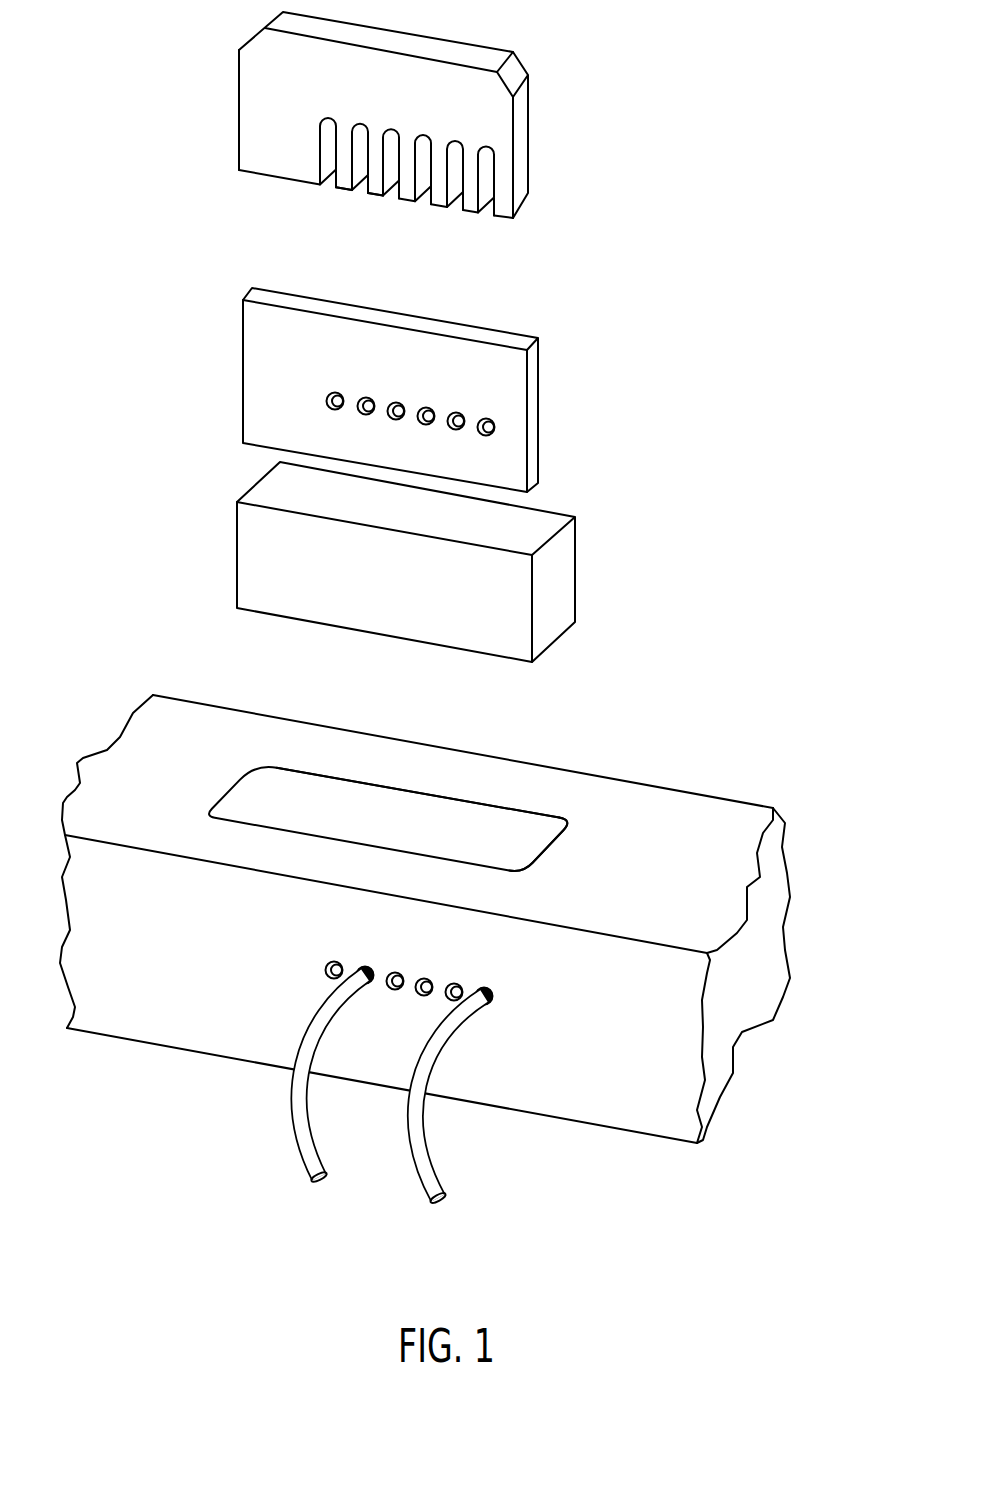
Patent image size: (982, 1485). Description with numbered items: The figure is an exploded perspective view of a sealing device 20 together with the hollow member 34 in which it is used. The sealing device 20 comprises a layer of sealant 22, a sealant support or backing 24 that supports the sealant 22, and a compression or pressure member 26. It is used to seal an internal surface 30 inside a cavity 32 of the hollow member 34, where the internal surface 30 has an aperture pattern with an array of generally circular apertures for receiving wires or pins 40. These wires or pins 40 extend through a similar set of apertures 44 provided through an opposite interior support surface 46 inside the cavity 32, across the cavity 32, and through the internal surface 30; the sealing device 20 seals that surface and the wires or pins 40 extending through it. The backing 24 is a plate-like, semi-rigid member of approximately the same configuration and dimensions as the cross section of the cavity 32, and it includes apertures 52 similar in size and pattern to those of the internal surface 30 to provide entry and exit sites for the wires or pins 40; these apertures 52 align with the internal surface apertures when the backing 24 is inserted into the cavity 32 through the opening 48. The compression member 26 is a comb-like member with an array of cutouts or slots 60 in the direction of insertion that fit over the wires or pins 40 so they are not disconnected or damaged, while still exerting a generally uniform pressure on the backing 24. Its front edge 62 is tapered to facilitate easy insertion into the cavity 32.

The sealing device 20 is at (723, 218).
The layer of sealant 22 is at (575, 583).
The sealant support or backing 24 is at (538, 430).
The compression or pressure member 26 is at (522, 108).
The internal surface 30 is at (301, 805).
The cavity 32 is at (528, 800).
The hollow member 34 is at (817, 855).
The wires or pins (substrates) 40 is at (423, 1192).
The apertures 44 is at (285, 973).
The opposite interior surface or support surface 46 is at (447, 860).
The opening 48 is at (583, 820).
The apertures 52 is at (330, 383).
The cutouts or slots 60 is at (362, 188).
The front edge 62 is at (453, 218).